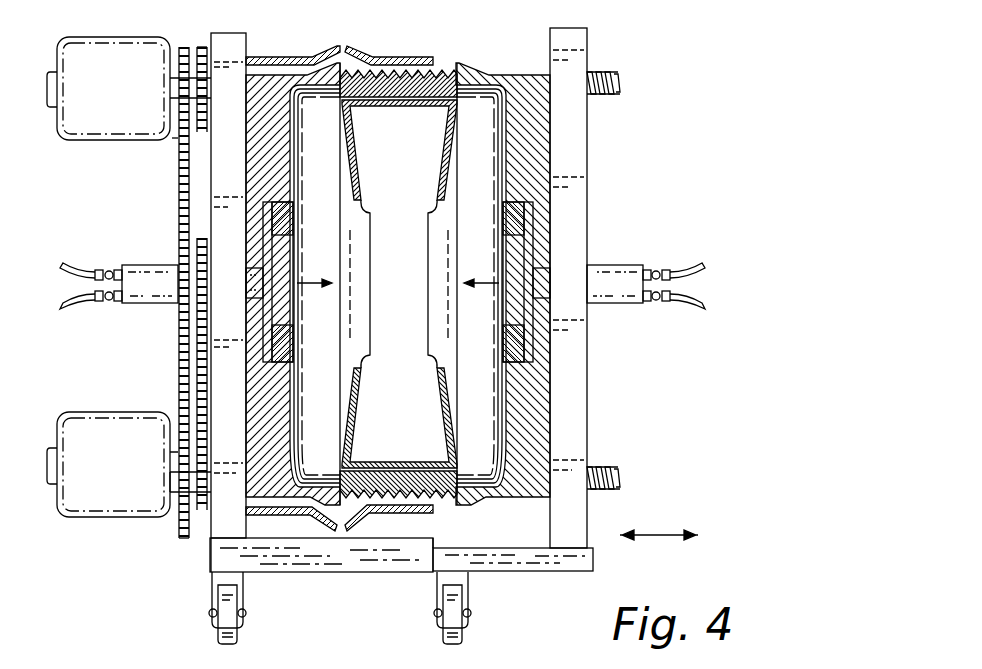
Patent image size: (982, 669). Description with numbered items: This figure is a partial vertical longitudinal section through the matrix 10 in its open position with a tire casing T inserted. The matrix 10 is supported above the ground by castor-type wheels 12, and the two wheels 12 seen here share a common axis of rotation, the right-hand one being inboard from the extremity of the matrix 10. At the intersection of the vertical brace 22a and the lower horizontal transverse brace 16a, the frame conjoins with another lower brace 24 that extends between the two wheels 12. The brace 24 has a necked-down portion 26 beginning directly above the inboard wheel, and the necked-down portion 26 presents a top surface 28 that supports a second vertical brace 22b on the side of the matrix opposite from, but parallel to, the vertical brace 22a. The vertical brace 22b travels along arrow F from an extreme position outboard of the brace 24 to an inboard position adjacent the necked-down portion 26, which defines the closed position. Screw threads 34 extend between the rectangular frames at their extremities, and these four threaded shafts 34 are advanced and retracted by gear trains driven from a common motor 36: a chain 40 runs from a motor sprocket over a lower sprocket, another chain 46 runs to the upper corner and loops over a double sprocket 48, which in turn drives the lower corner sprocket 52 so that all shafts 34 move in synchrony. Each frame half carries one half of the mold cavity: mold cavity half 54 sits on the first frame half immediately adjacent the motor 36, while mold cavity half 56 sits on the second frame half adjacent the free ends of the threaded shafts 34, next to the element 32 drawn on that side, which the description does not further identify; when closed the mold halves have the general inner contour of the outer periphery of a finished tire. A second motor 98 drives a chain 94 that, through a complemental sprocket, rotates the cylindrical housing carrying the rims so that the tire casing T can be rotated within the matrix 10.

The matrix 10 is at (645, 75).
The castor-type wheels 12 is at (222, 633).
The transverse brace 16a is at (211, 561).
The vertical brace 22a is at (238, 58).
The vertical brace 22b is at (568, 227).
The lower brace 24 is at (287, 565).
The necked-down portion 26 is at (435, 543).
The top surface 28 is at (522, 548).
The second mold half 32 is at (590, 400).
The screw threads 34 is at (452, 62).
The motor 36 is at (131, 104).
The chain 40 is at (178, 210).
The chain 46 is at (205, 47).
The double sprocket 48 is at (176, 134).
The lower right hand corner sprocket 52 is at (178, 528).
The mold cavity half 54 is at (268, 410).
The mold cavity half 56 is at (547, 383).
The chain 94 is at (197, 354).
The motor 98 is at (131, 481).
The tire T is at (440, 174).
The arrow F is at (660, 535).